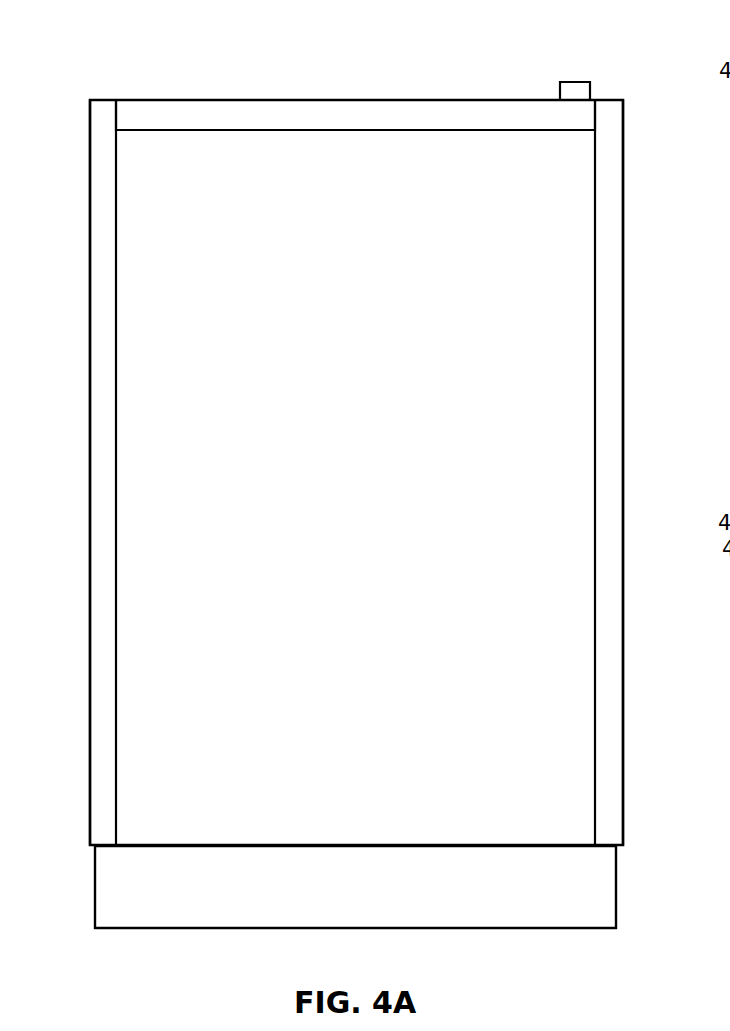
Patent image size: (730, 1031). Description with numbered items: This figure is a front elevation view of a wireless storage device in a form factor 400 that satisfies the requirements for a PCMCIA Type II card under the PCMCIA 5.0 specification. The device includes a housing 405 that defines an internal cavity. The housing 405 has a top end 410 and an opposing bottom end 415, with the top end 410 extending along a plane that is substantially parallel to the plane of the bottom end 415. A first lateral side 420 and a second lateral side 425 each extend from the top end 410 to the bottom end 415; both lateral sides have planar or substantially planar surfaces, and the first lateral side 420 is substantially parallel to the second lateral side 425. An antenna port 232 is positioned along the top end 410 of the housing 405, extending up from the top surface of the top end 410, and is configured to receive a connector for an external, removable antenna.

The form factor 400 is at (487, 47).
The housing 405 is at (370, 391).
The top end 410 is at (456, 100).
The bottom end 415 is at (357, 928).
The first lateral side 420 is at (90, 472).
The second lateral side 425 is at (623, 470).
The antenna port 232 is at (583, 82).